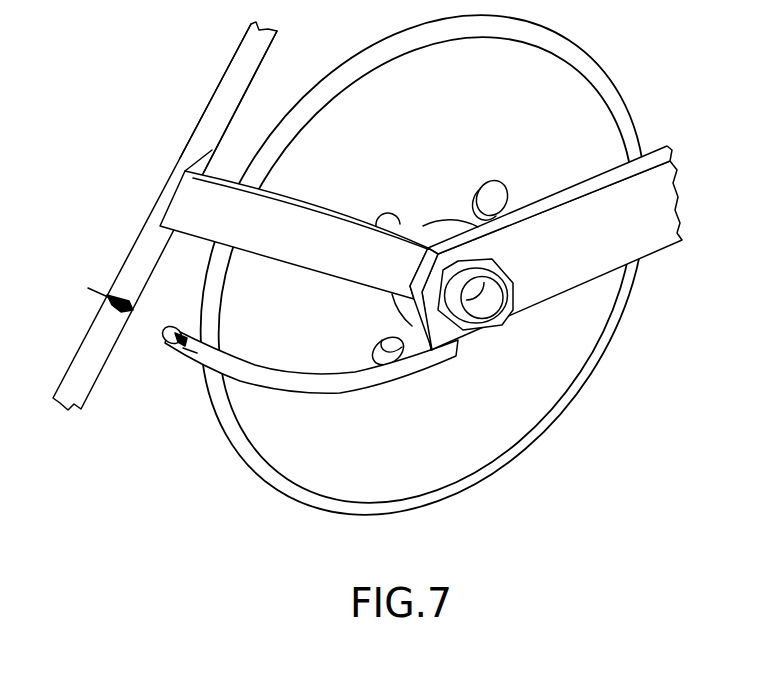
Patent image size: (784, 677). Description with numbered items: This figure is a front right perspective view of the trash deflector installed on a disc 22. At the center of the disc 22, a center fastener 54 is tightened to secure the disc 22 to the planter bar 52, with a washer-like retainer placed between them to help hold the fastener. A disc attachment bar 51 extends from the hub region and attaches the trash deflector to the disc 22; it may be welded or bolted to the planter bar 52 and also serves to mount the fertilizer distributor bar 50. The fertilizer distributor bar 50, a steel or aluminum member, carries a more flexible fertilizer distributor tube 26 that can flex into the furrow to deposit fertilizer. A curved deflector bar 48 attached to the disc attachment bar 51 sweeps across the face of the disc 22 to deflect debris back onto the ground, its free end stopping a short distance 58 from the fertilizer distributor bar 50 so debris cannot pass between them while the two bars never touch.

The disc 22 is at (292, 490).
The fertilizer distributor tube 26 is at (72, 363).
The fertilizer distributor bar 50 is at (137, 238).
The deflector bar 48 is at (323, 388).
The distance 58 is at (152, 325).
The disc attachment bar 51 is at (342, 213).
The planter bar 52 is at (575, 281).
The center fastener 54 is at (488, 315).